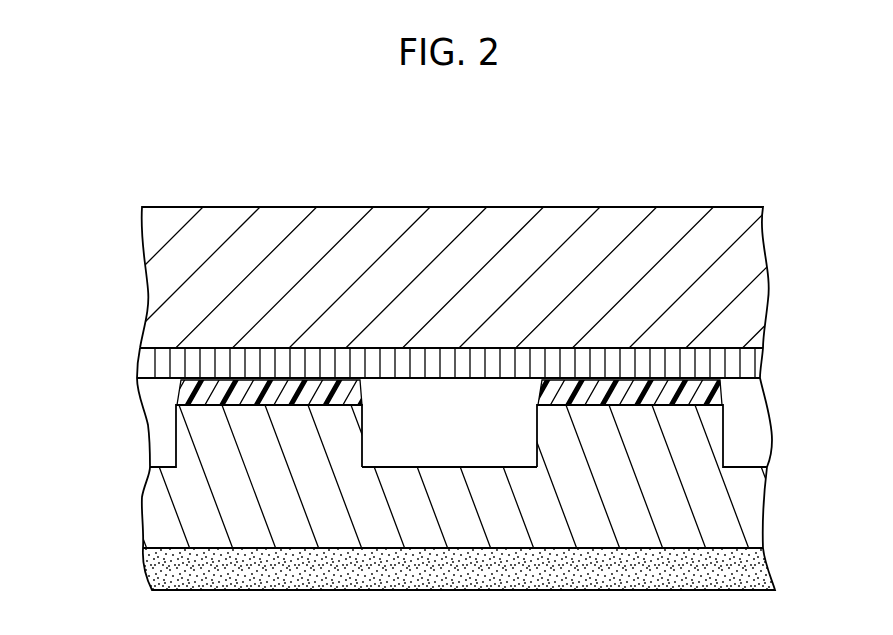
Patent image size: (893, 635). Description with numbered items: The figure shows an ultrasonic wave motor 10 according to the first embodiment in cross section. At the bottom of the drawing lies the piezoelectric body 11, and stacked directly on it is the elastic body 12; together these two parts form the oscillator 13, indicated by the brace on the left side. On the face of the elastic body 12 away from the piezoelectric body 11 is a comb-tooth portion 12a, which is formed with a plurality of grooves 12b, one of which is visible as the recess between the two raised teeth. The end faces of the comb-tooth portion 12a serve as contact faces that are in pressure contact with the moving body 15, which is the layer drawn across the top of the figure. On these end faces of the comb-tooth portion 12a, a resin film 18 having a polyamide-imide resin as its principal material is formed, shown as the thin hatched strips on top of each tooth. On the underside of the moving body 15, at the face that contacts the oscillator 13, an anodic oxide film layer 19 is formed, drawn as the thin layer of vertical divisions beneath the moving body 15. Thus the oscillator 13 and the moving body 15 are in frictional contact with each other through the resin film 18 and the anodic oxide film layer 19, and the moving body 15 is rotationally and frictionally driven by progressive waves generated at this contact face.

The ultrasonic wave motor 10 is at (716, 150).
The piezoelectric body 11 is at (155, 574).
The elastic body 12 is at (152, 516).
The comb-tooth portion 12a is at (192, 427).
The grooves 12b is at (392, 458).
The oscillator 13 is at (82, 387).
The moving body 15 is at (757, 253).
The resin film 18 is at (720, 390).
The anodic oxide film layer 19 is at (748, 363).